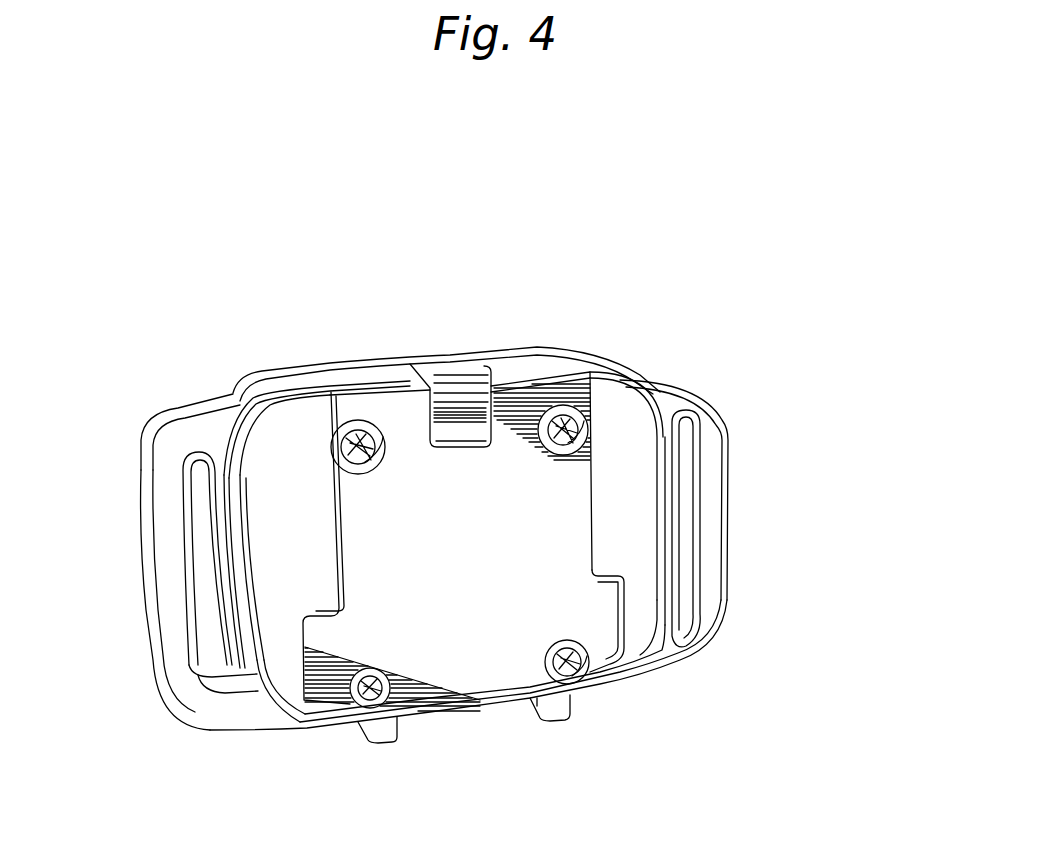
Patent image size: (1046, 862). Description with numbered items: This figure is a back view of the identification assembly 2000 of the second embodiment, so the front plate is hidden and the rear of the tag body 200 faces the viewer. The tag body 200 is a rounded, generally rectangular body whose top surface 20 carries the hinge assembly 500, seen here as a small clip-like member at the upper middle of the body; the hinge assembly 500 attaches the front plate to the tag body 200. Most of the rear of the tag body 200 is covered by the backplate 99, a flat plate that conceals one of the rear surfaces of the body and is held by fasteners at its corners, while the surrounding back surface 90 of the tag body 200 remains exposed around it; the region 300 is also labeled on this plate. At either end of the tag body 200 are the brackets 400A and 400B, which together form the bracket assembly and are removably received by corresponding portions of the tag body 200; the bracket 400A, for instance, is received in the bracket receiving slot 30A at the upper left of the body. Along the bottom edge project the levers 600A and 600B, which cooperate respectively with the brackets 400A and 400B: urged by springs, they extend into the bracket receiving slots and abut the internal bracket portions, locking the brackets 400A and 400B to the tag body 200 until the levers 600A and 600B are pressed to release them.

The identification assembly 2000 is at (165, 200).
The tag body 200 is at (647, 380).
The top surface 20 is at (563, 360).
The bracket receiving slot 30A is at (262, 402).
The back plate 300 is at (563, 517).
The backplate 99 is at (603, 618).
The hinge assembly 500 is at (450, 380).
The back surface 90 is at (647, 540).
The bracket 400A is at (157, 670).
The bracket 400B is at (730, 540).
The lever 600A is at (380, 742).
The lever 600B is at (563, 707).